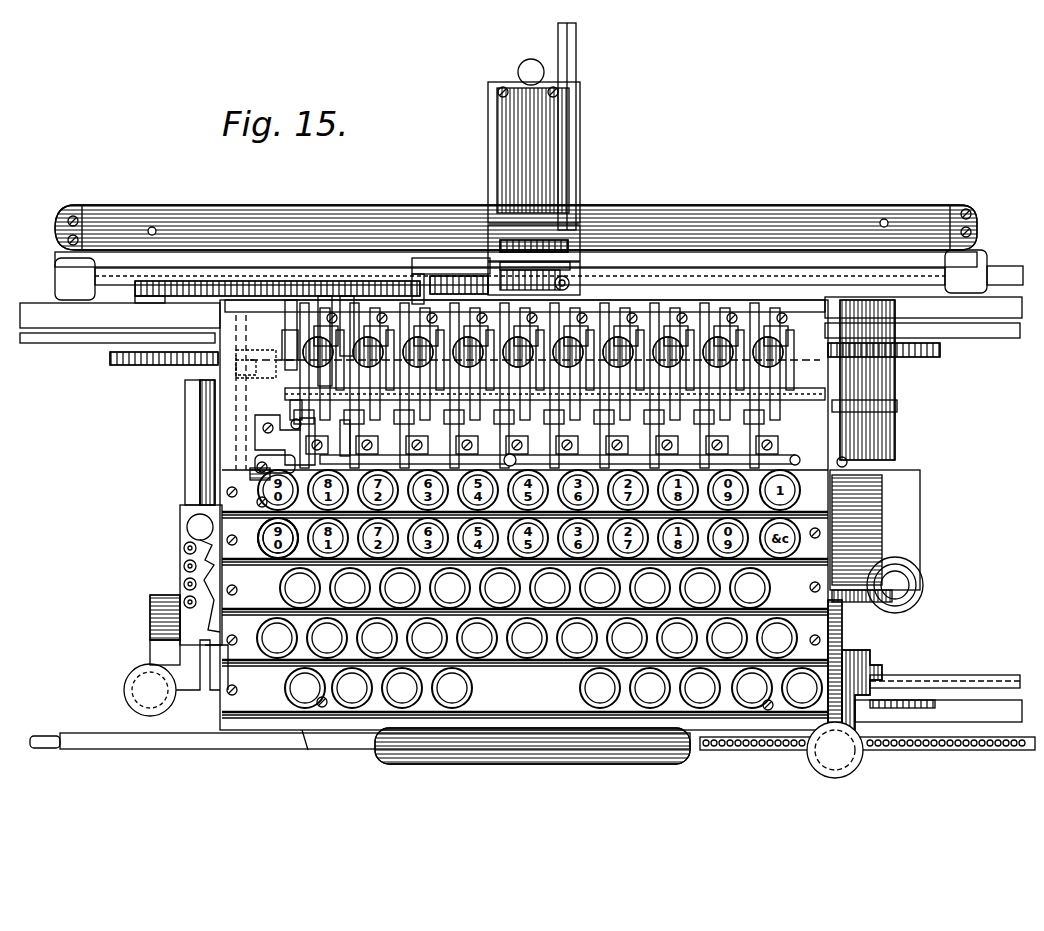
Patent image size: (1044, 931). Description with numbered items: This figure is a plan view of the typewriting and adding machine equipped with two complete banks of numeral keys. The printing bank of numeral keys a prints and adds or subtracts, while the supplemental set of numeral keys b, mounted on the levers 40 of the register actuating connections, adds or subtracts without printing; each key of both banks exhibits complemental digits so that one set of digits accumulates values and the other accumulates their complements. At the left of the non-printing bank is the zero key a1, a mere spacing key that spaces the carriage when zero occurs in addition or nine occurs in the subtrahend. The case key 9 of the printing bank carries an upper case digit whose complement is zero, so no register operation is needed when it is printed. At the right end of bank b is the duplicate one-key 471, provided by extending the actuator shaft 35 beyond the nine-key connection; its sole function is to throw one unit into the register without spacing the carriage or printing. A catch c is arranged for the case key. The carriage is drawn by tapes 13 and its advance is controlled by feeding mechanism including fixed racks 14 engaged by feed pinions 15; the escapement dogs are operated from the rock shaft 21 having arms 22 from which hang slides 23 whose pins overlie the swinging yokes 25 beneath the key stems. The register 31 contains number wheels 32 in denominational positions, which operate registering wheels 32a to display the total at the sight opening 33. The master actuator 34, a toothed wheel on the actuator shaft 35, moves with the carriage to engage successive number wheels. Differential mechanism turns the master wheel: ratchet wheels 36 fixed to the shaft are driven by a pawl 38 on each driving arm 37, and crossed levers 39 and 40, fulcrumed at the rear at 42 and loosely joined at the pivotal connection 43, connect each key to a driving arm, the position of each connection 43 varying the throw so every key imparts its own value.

The tapes 13 is at (707, 268).
The fixed racks 14 is at (176, 287).
The feed pinions 15 is at (480, 282).
The rock shaft 21 is at (535, 390).
The arms 22 is at (256, 357).
The slides 23 is at (238, 325).
The swinging yokes 25 is at (230, 410).
The register 31 is at (515, 137).
The number wheels 32 is at (492, 262).
The registering wheels 32a is at (534, 242).
The sight opening 33 is at (505, 262).
The master actuator 34 is at (442, 272).
The actuator shaft 35 is at (284, 330).
The ratchet wheels 36 is at (290, 395).
The driving arm 37 is at (350, 300).
The pawl 38 is at (325, 296).
The lever 39 is at (345, 438).
The lever 40 is at (316, 441).
The fulcrum 42 is at (300, 300).
The pivotal connection 43 is at (560, 438).
The duplicate 1-key 471 is at (862, 470).
The numeral keys a is at (277, 556).
The 0-key a1 is at (283, 478).
The supplemental numeral keys b is at (320, 500).
The catch c is at (306, 750).
The case key 9 is at (287, 693).